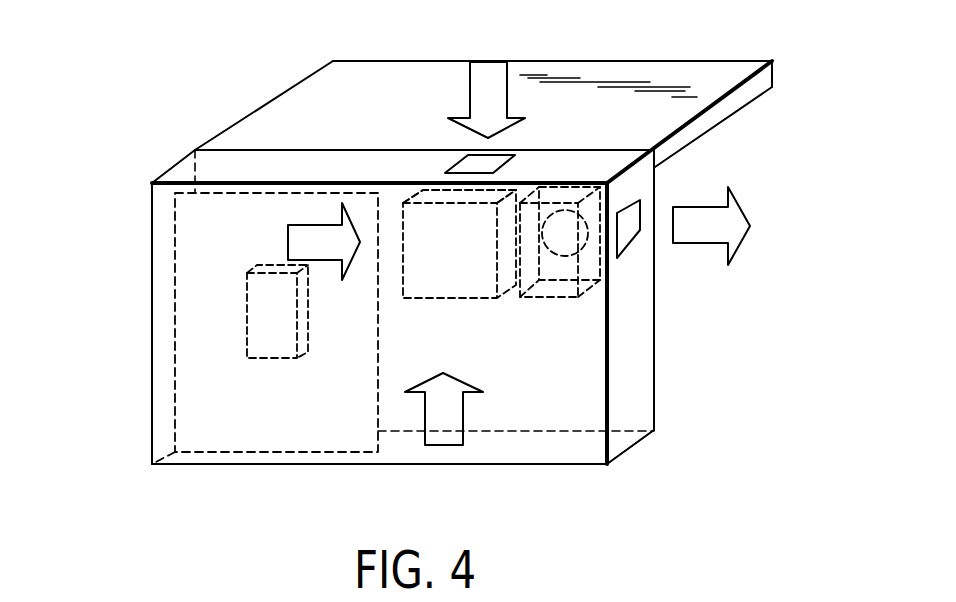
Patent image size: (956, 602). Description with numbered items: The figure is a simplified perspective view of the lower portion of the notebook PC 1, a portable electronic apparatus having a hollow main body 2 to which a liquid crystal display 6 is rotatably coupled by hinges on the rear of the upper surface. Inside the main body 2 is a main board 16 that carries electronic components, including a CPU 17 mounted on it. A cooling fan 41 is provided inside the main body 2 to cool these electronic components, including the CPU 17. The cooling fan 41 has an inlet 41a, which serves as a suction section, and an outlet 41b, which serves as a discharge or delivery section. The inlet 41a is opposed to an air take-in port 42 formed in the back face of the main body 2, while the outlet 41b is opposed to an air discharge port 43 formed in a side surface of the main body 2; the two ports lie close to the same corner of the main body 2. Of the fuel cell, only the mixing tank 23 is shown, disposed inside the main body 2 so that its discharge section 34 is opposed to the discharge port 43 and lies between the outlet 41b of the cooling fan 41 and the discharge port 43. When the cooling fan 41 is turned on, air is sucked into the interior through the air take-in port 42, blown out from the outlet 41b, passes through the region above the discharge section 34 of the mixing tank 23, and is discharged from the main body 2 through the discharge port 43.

The notebook PC 1 is at (192, 126).
The main body 2 is at (152, 317).
The liquid crystal display 6 is at (673, 77).
The main board 16 is at (277, 438).
The CPU 17 is at (245, 330).
The mixing tank 23 is at (607, 267).
The discharge section 34 is at (567, 210).
The cooling fan 41 is at (478, 282).
The inlet 41a is at (449, 154).
The outlet 41b is at (512, 288).
The air take-in port 42 is at (490, 158).
The air discharge port 43 is at (632, 235).